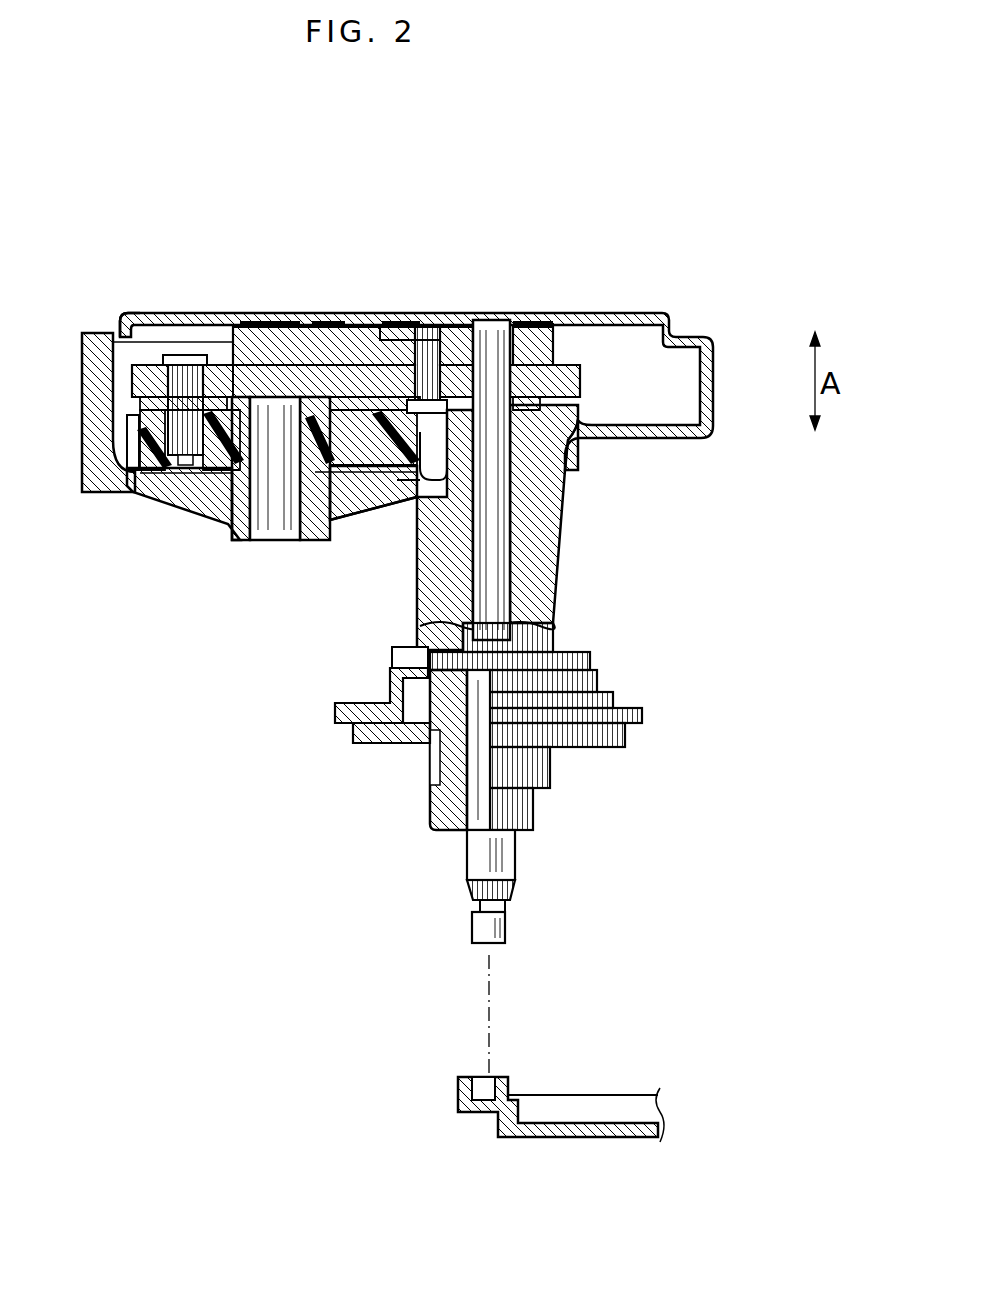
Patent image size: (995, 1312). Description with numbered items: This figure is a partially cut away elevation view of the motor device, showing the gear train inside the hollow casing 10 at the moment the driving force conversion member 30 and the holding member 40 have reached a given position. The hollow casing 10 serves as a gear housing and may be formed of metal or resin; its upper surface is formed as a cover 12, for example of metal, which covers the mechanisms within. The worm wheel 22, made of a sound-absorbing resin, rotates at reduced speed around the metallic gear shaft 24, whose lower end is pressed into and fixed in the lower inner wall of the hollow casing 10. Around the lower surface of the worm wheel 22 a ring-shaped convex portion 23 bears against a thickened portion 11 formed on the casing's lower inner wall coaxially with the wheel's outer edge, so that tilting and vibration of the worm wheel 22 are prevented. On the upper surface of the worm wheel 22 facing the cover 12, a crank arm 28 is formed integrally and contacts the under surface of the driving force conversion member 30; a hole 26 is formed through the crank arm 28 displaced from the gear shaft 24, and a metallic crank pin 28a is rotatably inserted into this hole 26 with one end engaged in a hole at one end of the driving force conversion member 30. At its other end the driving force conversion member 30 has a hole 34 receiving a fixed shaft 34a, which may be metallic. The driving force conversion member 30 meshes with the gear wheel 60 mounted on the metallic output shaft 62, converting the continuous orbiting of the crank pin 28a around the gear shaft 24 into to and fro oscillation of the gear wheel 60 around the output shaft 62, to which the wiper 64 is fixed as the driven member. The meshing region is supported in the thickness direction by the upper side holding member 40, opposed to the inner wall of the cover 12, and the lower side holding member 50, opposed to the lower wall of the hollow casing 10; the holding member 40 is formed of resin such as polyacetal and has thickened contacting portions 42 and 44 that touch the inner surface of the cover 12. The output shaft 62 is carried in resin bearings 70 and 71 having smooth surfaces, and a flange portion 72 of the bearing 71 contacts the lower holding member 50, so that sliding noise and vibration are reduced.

The hollow casing 10 is at (439, 367).
The thickened portion 11 is at (133, 480).
The cover 12 is at (135, 318).
The worm wheel 22 is at (208, 470).
The convex portion 23 is at (128, 478).
The gear shaft 24 is at (268, 527).
The hole 26 is at (165, 432).
The crank arm 28 is at (140, 403).
The crank pin 28a is at (188, 355).
The driving force conversion member 30 is at (215, 372).
The hole 34 is at (384, 340).
The fixed shaft 34a is at (418, 348).
The upper side holding member 40 is at (352, 365).
The contacting portion 42 is at (372, 325).
The contacting portion 44 is at (262, 327).
The lower side holding member 50 is at (602, 440).
The gear wheel 60 is at (565, 368).
The output shaft 62 is at (496, 345).
The wiper 64 is at (588, 1112).
The bearing 70 is at (450, 798).
The bearing 71 is at (567, 505).
The flange portion 72 is at (578, 422).